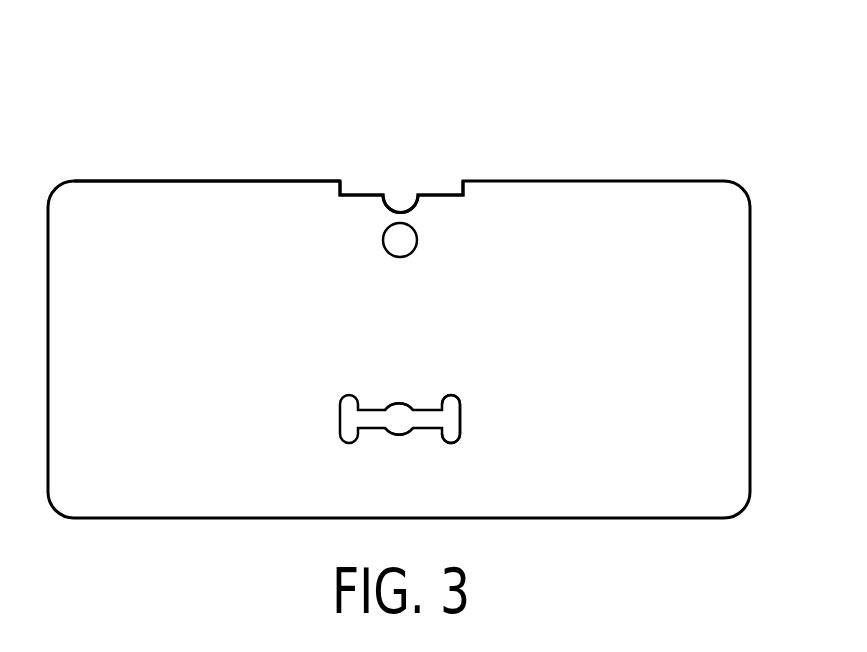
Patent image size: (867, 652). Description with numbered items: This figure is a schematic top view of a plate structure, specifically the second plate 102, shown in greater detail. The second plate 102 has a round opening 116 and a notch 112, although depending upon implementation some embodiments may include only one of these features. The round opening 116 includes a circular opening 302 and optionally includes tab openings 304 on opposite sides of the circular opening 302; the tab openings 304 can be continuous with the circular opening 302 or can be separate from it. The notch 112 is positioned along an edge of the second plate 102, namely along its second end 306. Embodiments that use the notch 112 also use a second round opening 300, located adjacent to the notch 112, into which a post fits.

The second plate 102 is at (105, 97).
The second end 306 is at (210, 174).
The notch 112 is at (389, 166).
The second round opening 300 is at (405, 224).
The round opening 116 is at (428, 430).
The circular opening 302 is at (388, 404).
The tab openings 304 is at (462, 411).